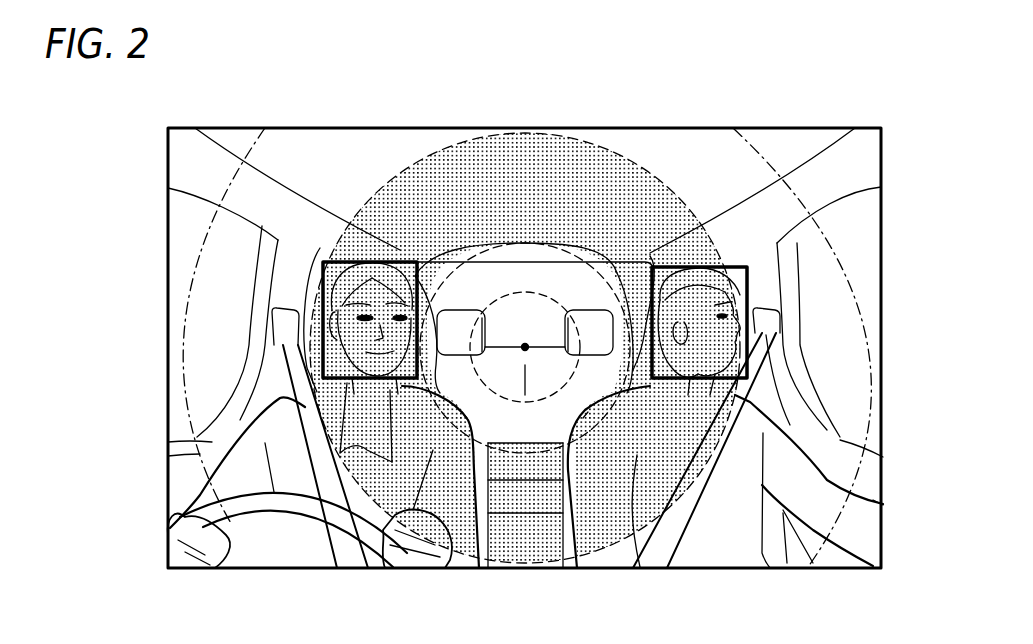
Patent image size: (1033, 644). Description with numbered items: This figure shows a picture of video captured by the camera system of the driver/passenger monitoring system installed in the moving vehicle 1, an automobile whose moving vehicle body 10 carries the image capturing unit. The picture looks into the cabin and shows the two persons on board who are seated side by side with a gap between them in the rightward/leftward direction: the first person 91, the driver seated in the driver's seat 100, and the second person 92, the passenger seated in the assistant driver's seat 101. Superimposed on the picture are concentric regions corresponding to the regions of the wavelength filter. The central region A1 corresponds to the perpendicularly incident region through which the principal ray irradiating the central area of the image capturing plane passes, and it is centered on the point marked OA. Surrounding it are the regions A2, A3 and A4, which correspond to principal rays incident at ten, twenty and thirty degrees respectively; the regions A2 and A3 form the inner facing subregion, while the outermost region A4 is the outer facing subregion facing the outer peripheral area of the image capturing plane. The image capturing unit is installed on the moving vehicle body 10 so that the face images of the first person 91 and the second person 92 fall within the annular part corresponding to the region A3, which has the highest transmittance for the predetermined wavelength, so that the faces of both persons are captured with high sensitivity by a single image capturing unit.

The moving vehicle 1 is at (851, 174).
The moving vehicle body 10 is at (870, 478).
The first person 91 is at (263, 432).
The second person 92 is at (790, 440).
The driver's seat 100 is at (480, 432).
The assistant driver's seat 101 is at (560, 547).
The region A1 is at (500, 322).
The region A2 is at (552, 250).
The region A3 is at (472, 147).
The region A4 is at (733, 142).
The optical axis center OA is at (531, 330).